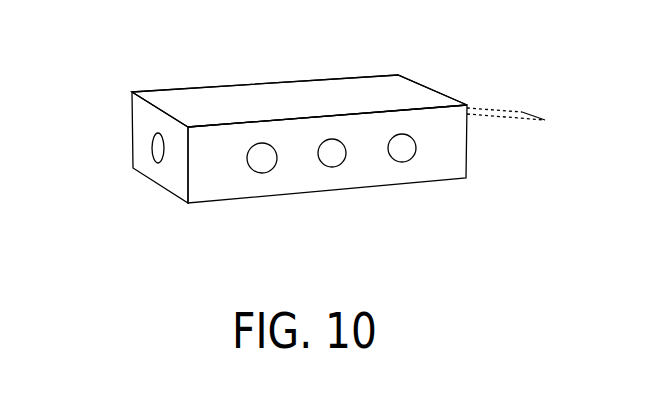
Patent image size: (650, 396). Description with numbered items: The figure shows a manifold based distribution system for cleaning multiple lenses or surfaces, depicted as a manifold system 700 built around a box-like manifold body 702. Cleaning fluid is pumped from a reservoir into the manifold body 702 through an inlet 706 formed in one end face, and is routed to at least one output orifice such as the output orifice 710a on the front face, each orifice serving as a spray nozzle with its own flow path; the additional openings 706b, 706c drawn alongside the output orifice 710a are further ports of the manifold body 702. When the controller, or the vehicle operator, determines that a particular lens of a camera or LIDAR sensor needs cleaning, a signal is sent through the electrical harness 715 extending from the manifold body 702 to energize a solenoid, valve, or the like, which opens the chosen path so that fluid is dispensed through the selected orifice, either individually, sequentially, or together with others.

The manifold system 700 is at (198, 72).
The manifold body 702 is at (395, 93).
The inlet 706 is at (155, 147).
The aperture 706b is at (332, 155).
The aperture 706c is at (402, 148).
The output orifice 710a is at (259, 158).
The electrical harness 715 is at (523, 113).